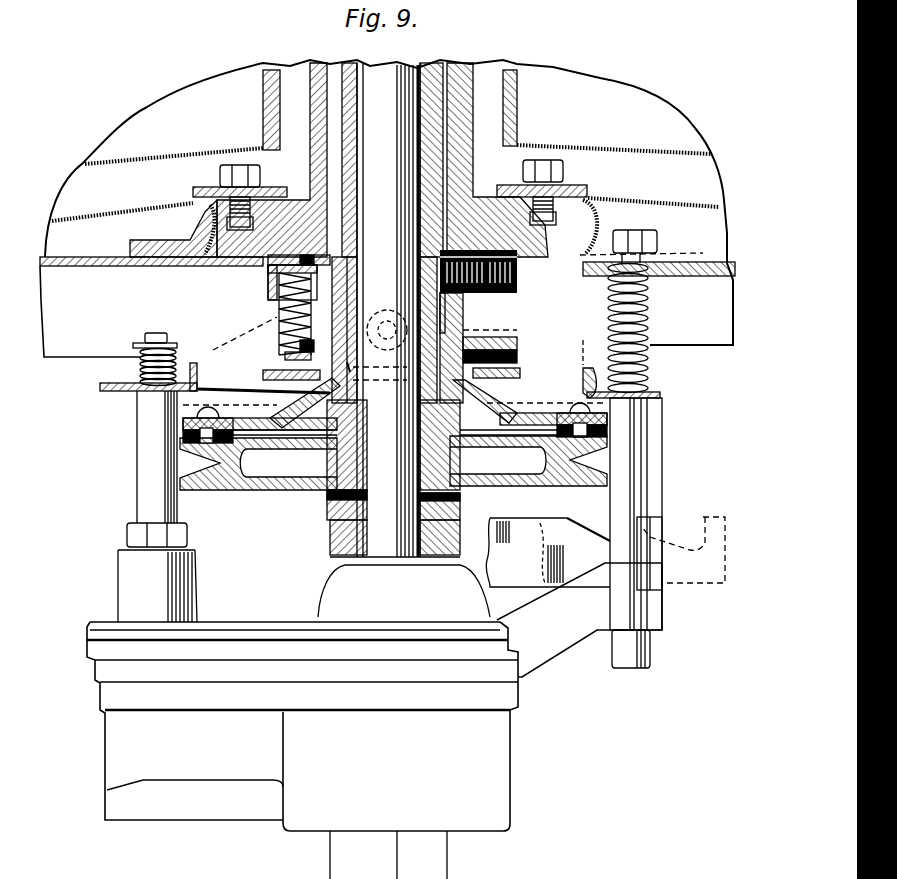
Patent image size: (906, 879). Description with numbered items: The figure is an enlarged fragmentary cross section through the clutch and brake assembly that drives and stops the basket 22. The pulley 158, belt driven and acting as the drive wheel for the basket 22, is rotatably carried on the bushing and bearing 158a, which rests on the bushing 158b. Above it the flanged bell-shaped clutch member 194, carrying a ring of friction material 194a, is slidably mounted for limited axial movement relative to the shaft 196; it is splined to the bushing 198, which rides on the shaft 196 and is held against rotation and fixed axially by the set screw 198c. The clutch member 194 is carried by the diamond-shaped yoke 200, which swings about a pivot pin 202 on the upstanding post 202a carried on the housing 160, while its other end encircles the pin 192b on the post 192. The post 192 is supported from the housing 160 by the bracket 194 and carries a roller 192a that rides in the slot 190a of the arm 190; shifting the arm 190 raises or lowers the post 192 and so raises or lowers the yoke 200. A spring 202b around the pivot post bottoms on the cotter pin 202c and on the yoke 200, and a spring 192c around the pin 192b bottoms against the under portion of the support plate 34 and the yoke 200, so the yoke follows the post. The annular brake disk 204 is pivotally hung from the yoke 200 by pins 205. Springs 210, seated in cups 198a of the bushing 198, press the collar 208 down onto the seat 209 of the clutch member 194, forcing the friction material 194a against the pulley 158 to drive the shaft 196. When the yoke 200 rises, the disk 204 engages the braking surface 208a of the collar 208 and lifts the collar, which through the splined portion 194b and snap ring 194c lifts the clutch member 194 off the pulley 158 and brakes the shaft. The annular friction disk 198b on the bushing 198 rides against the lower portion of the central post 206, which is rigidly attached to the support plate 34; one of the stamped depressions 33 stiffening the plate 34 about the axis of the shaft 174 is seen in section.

The basket 22 is at (556, 146).
The stamped depressions 33 is at (668, 262).
The support plate 34 is at (705, 245).
The pulley 158 is at (240, 470).
The bushing and bearing 158a is at (327, 506).
The bushing 158b is at (330, 534).
The housing 160 is at (512, 766).
The shaft 174 is at (418, 47).
The arm 190 is at (522, 527).
The slot 190a is at (597, 521).
The post 192 is at (636, 460).
The roller 192a is at (650, 400).
The pin 192b is at (650, 288).
The spring 192c is at (650, 320).
The clutch member 194 is at (183, 424).
The friction material 194a is at (183, 437).
The splined portion 194b is at (445, 327).
The snap ring 194c is at (465, 350).
The shaft 196 is at (350, 64).
The bushing 198 is at (453, 310).
The cups 198a is at (268, 278).
The annular friction disk 198b is at (268, 260).
The set screw 198c is at (517, 275).
The yoke 200 is at (211, 372).
The pivot pin 202 is at (150, 334).
The upstanding post 202a is at (137, 410).
The spring 202b is at (140, 370).
The cotter pin 202c is at (133, 345).
The annular brake disk 204 is at (517, 375).
The pins 205 is at (387, 303).
The central post 206 is at (153, 248).
The collar 208 is at (290, 352).
The braking surface 208a is at (268, 370).
The seat 209 is at (350, 370).
The springs 210 is at (282, 312).